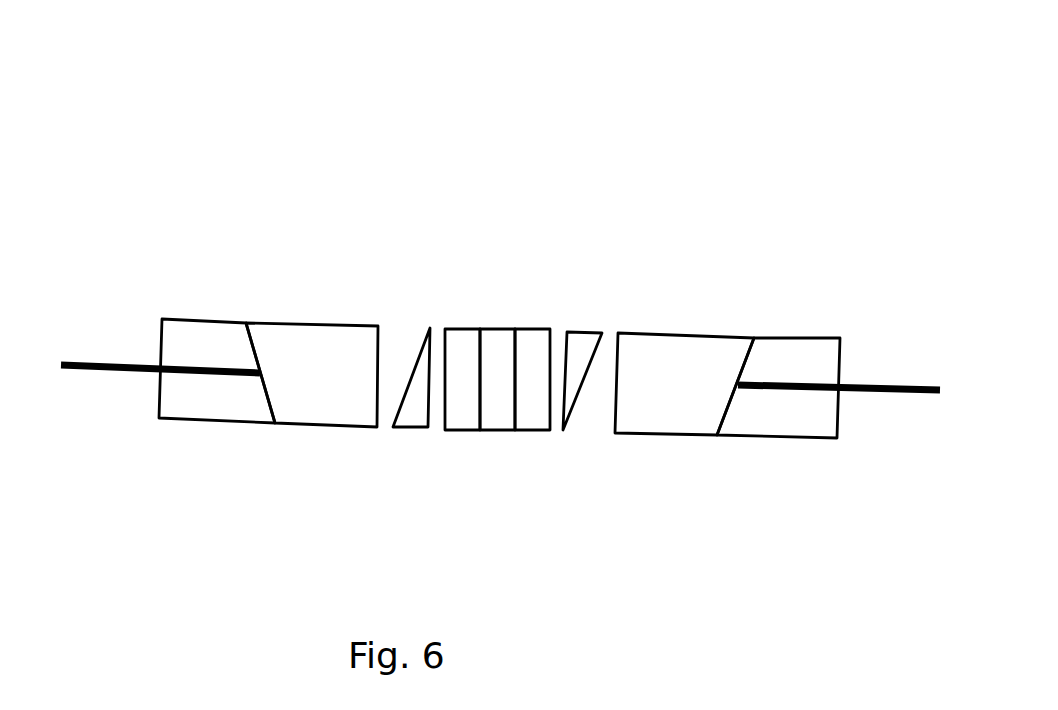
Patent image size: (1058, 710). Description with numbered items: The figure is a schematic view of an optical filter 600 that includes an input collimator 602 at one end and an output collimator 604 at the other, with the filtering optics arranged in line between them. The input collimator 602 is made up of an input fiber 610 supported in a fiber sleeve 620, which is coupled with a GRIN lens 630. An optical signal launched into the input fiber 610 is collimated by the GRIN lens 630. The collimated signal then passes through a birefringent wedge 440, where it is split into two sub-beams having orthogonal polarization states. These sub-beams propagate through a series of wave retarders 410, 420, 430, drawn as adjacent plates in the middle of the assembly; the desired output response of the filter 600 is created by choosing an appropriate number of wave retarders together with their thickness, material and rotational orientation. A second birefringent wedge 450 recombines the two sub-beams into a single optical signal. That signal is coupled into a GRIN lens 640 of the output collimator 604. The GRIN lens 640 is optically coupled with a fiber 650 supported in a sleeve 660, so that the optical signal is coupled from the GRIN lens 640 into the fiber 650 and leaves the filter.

The optical filter 600 is at (768, 117).
The input collimator 602 is at (378, 320).
The output collimator 604 is at (620, 328).
The input fiber 610 is at (100, 371).
The fiber sleeve 620 is at (192, 423).
The GRIN lens 630 is at (310, 428).
The birefringent wedge 440 is at (413, 428).
The wave retarder 410 is at (462, 327).
The wave retarder 420 is at (500, 328).
The wave retarder 430 is at (537, 327).
The birefringent wedge 450 is at (565, 425).
The GRIN lens 640 is at (672, 437).
The sleeve 660 is at (767, 438).
The fiber 650 is at (907, 397).